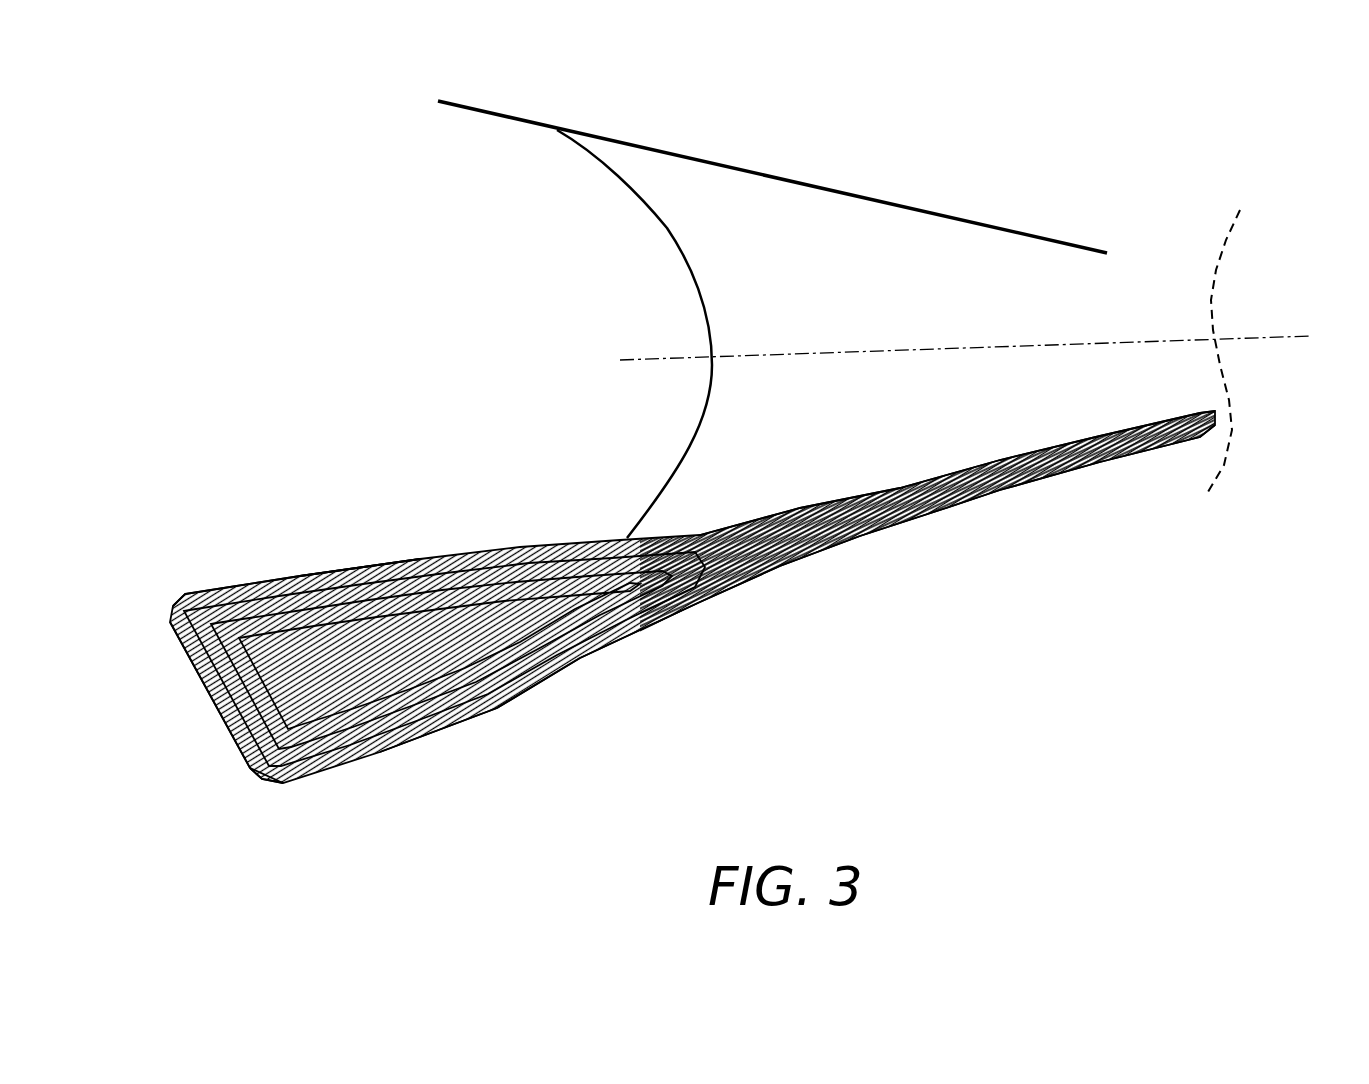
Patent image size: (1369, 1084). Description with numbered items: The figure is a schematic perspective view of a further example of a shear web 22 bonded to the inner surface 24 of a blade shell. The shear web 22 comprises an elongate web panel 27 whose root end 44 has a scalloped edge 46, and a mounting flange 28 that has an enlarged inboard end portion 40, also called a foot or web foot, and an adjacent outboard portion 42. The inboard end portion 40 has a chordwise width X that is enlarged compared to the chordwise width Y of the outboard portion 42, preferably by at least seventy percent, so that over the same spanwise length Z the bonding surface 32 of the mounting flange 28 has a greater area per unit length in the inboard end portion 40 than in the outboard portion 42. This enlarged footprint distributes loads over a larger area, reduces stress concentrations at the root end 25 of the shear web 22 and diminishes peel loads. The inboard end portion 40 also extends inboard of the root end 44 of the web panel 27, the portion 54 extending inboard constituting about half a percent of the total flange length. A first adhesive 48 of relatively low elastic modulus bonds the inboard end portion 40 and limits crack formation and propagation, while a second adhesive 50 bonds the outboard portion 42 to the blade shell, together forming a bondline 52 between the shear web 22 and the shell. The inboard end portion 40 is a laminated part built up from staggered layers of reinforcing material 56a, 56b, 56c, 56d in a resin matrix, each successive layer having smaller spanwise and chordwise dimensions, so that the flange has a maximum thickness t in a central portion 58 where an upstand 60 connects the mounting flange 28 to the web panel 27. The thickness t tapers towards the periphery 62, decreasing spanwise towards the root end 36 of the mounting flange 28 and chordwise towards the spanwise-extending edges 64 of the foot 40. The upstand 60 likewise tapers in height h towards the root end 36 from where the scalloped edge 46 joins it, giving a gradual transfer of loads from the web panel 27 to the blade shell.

The shear web 22 is at (476, 220).
The inner surface 24 is at (878, 675).
The root end 25 is at (198, 526).
The elongate web panel 27 is at (980, 322).
The mounting flange 28 is at (864, 473).
The bonding surface 32 is at (494, 719).
The root end of the mounting flange 36 is at (216, 704).
The inboard end portion 40 is at (655, 619).
The outboard portion 42 is at (1081, 428).
The root end of the elongate web panel 44 is at (706, 292).
The scalloped edge 46 is at (667, 222).
The first adhesive 48 is at (705, 601).
The second adhesive 50 is at (1065, 468).
The bondline 52 is at (847, 544).
The portion extending inboard of the shear web panel 54 is at (313, 526).
The layer of reinforcing material 56a is at (172, 620).
The layer of reinforcing material 56b is at (272, 720).
The layer of reinforcing material 56c is at (497, 650).
The layer of reinforcing material 56d is at (439, 656).
The central portion 58 is at (467, 600).
The upstand 60 is at (628, 572).
The periphery 62 is at (302, 786).
The spanwise-extending edges 64 is at (228, 590).